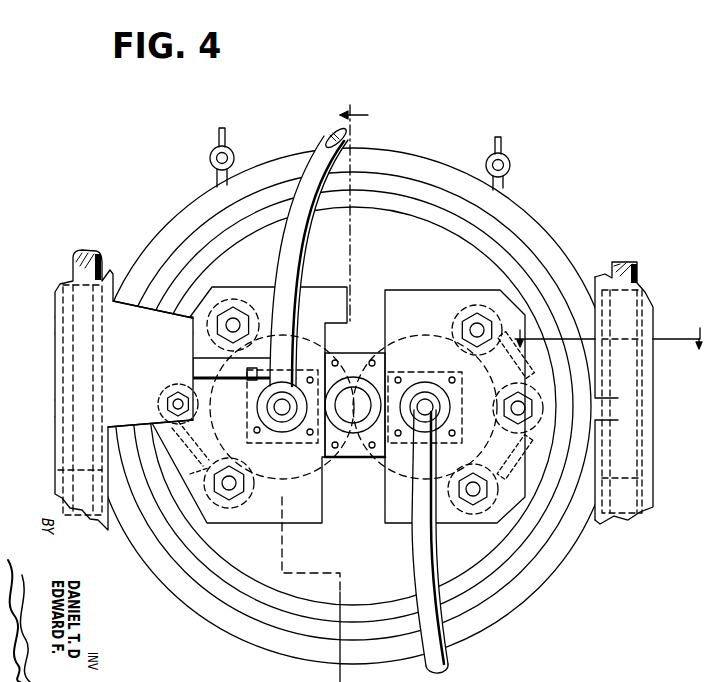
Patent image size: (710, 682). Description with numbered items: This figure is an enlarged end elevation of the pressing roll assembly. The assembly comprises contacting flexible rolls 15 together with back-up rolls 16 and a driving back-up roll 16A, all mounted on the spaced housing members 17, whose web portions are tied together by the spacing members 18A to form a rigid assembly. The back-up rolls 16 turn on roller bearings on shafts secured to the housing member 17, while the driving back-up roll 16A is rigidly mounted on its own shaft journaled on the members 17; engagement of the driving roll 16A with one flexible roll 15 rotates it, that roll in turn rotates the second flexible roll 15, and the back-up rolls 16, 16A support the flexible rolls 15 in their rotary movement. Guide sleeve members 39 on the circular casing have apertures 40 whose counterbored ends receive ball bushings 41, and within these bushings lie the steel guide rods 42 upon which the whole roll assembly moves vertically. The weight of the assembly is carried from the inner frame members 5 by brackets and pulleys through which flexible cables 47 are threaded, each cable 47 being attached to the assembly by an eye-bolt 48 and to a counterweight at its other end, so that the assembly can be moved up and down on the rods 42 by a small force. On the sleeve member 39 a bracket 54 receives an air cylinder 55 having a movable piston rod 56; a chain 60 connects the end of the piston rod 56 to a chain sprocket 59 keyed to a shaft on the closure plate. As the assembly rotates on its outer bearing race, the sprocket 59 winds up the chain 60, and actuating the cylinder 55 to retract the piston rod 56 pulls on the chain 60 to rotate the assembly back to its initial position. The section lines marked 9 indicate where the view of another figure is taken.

The inner frame member 5 is at (361, 212).
The section line 9- 9 is at (612, 348).
The flexible roll 15 is at (380, 356).
The back-up roll 16 is at (462, 297).
The driving back-up roll 16A is at (153, 383).
The housing member 17 is at (188, 205).
The spacing member 18A is at (280, 479).
The guide sleeve member 39 is at (62, 338).
The aperture 40 is at (68, 368).
The ball bushing 41 is at (63, 302).
The guide rod 42 is at (73, 264).
The flexible cable 47 is at (227, 132).
The eye-bolt 48 is at (210, 158).
The bracket 54 is at (118, 424).
The air cylinder 55 is at (118, 387).
The piston rod 56 is at (268, 300).
The chain sprocket 59 is at (357, 460).
The chain 60 is at (310, 366).